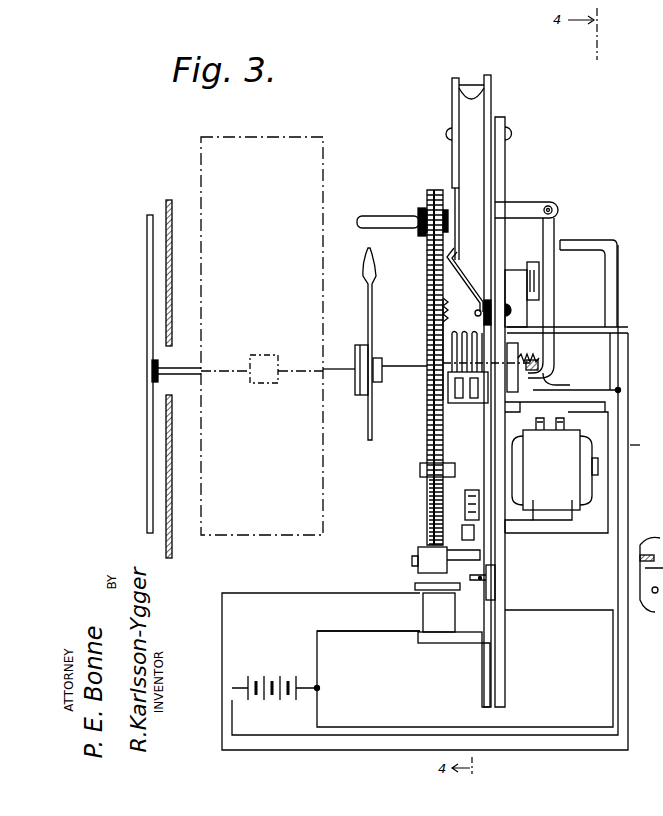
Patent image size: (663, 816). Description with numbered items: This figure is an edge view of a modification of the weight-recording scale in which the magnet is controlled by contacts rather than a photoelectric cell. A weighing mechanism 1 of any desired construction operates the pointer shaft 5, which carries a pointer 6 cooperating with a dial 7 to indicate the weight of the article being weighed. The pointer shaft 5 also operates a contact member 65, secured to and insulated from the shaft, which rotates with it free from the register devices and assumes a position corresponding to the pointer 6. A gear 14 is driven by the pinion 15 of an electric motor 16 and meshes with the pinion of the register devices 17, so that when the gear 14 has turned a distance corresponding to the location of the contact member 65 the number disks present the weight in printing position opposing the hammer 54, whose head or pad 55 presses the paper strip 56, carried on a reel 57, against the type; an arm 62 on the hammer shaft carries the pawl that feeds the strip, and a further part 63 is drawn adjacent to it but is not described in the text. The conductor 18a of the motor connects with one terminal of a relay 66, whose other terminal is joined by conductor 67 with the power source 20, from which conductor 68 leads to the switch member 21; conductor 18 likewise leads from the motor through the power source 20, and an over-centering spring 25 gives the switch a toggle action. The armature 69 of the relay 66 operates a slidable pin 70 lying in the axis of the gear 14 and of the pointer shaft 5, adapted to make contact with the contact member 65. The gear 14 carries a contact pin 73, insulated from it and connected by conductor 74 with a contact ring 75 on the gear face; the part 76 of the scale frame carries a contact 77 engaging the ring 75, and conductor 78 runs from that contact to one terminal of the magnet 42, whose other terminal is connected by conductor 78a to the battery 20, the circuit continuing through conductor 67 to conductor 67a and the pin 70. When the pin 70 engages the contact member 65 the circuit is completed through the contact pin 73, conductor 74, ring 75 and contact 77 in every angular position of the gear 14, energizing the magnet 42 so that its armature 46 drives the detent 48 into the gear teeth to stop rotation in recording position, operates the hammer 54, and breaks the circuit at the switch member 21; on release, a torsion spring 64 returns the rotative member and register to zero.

The weighing mechanism 1 is at (272, 142).
The pointer shaft 5 is at (180, 376).
The pointer 6 is at (147, 422).
The dial 7 is at (172, 456).
The gear 14 is at (427, 422).
The pinion 15 is at (430, 485).
The electric motor 16 is at (551, 475).
The register device 17 is at (456, 404).
The conductor 18 is at (610, 422).
The conductor 18a is at (610, 278).
The power source 20 is at (262, 690).
The switch member 21 is at (500, 581).
The over-centering spring 25 is at (420, 584).
The magnet 42 is at (450, 618).
The armature 46 is at (416, 560).
The detent 48 is at (430, 547).
The hammer 54 is at (480, 432).
The head or pad 55 is at (432, 345).
The paper strip 56 is at (455, 160).
The reel 57 is at (462, 100).
The arm 62 is at (466, 508).
The contact block 63 is at (465, 530).
The torsion spring 64 is at (432, 395).
The contact member 65 is at (368, 312).
The relay 66 is at (520, 304).
The conductor 67 is at (590, 240).
The conductor 67a is at (562, 388).
The conductor 68 is at (398, 727).
The armature 69 is at (553, 271).
The slidable pin 70 is at (392, 366).
The contact pin 73 is at (360, 216).
The conductor 74 is at (448, 236).
The contact ring 75 is at (447, 306).
The part of the scale frame 76 is at (497, 159).
The contact 77 is at (470, 275).
The conductor 78 is at (636, 447).
The conductor 78a is at (340, 632).